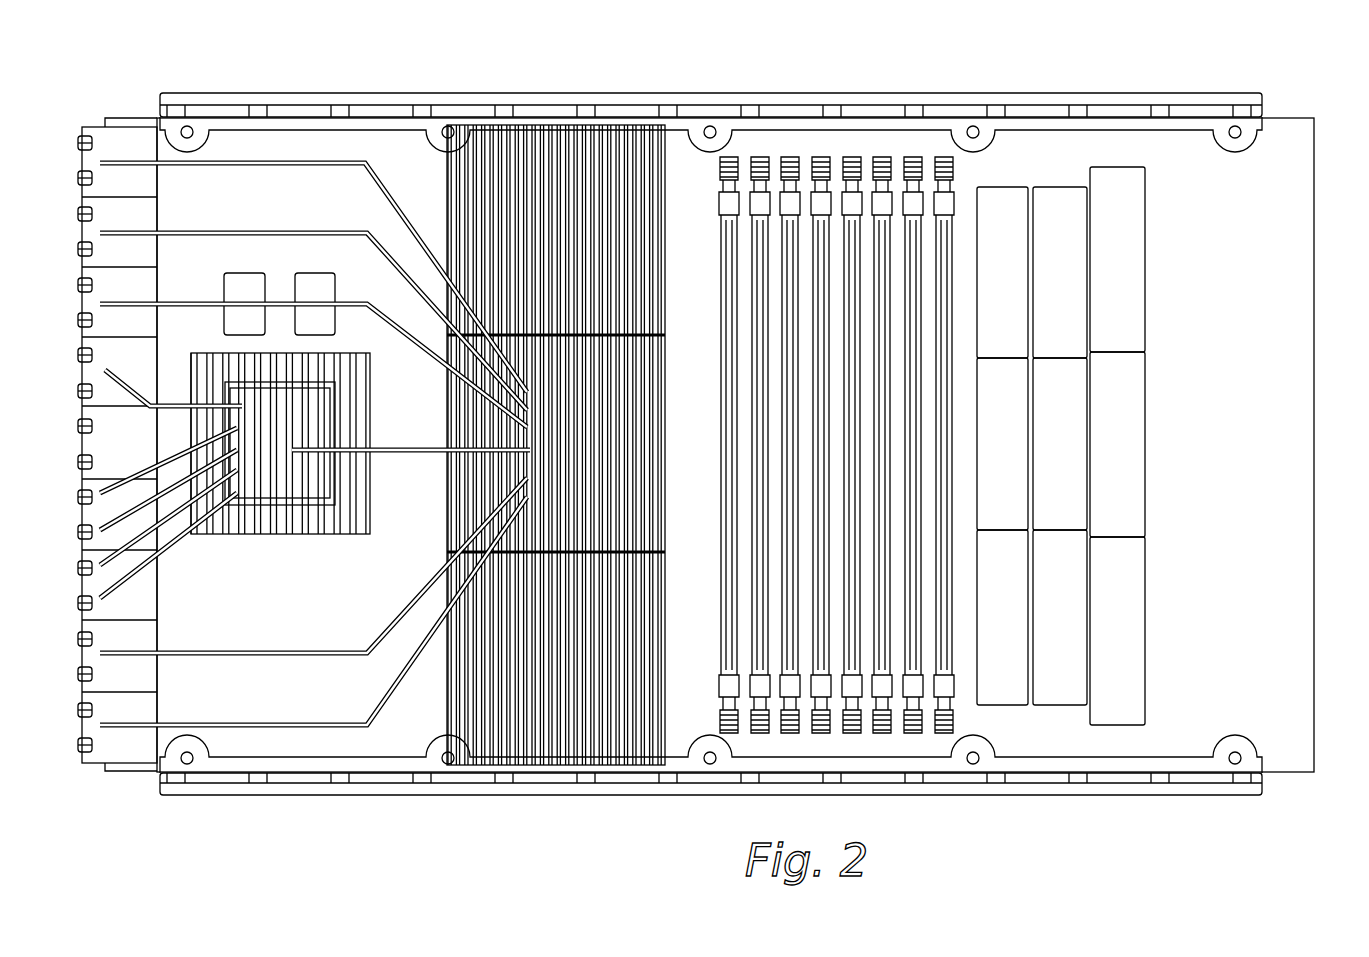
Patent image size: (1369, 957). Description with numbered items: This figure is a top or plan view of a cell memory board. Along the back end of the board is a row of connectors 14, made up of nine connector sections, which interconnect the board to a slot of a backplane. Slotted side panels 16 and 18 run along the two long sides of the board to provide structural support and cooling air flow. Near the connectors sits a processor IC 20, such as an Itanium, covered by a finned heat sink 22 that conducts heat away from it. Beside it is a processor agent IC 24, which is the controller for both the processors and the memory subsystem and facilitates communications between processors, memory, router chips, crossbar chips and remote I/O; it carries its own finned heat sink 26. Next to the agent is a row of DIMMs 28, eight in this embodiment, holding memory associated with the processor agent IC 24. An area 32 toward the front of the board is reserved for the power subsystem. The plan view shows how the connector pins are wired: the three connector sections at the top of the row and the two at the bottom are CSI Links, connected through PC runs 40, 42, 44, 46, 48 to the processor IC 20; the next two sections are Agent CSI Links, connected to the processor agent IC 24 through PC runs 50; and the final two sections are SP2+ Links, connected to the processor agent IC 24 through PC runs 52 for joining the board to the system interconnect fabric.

The connectors 14 is at (66, 122).
The slotted side panel 16 is at (468, 792).
The slotted side panel 18 is at (505, 93).
The processor IC 20 is at (640, 462).
The finned heat sink 22 is at (667, 183).
The processor agent IC 24 is at (307, 436).
The finned heat sink 26 is at (323, 536).
The row of DIMMs 28 is at (977, 164).
The area 32 is at (1272, 348).
The PC run 40 is at (300, 170).
The PC run 42 is at (240, 232).
The PC run 44 is at (180, 303).
The PC run 46 is at (318, 652).
The PC run 48 is at (222, 722).
The PC runs 50 is at (175, 402).
The PC runs 52 is at (183, 554).